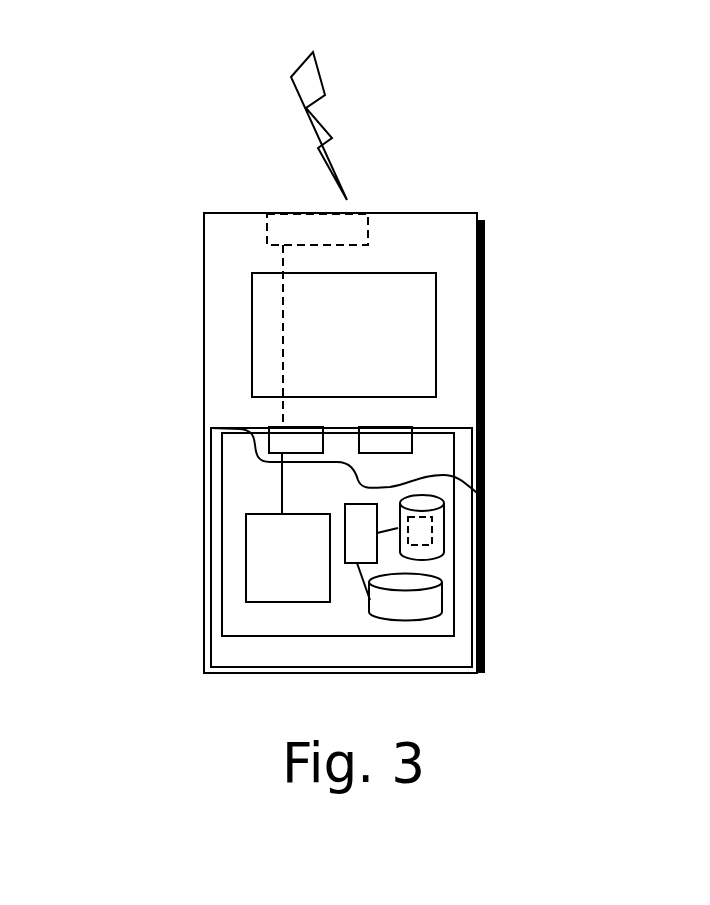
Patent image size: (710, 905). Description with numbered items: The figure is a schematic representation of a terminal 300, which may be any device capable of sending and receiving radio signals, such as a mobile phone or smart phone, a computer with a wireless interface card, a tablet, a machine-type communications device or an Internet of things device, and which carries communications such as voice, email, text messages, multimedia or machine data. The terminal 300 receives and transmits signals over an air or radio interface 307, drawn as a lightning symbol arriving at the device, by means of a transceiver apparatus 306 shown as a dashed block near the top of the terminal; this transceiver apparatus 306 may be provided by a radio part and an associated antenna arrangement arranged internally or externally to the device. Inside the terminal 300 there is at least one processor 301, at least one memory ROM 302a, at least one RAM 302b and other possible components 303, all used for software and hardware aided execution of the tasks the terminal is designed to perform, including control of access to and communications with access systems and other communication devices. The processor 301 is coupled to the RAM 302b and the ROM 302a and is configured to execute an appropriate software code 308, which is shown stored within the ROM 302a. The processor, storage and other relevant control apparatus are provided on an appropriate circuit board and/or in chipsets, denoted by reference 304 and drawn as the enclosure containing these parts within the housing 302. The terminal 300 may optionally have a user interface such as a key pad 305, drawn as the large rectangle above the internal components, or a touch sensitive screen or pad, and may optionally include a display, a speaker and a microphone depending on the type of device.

The terminal 300 is at (205, 250).
The processor 301 is at (362, 518).
The housing 302 is at (245, 620).
The memory ROM 302a is at (447, 531).
The RAM 302b is at (413, 595).
The other possible components 303 is at (273, 440).
The circuit board and/or chipsets 304 is at (252, 543).
The key pad 305 is at (267, 323).
The transceiver apparatus 306 is at (358, 225).
The air or radio interface 307 is at (345, 152).
The software code 308 is at (410, 530).